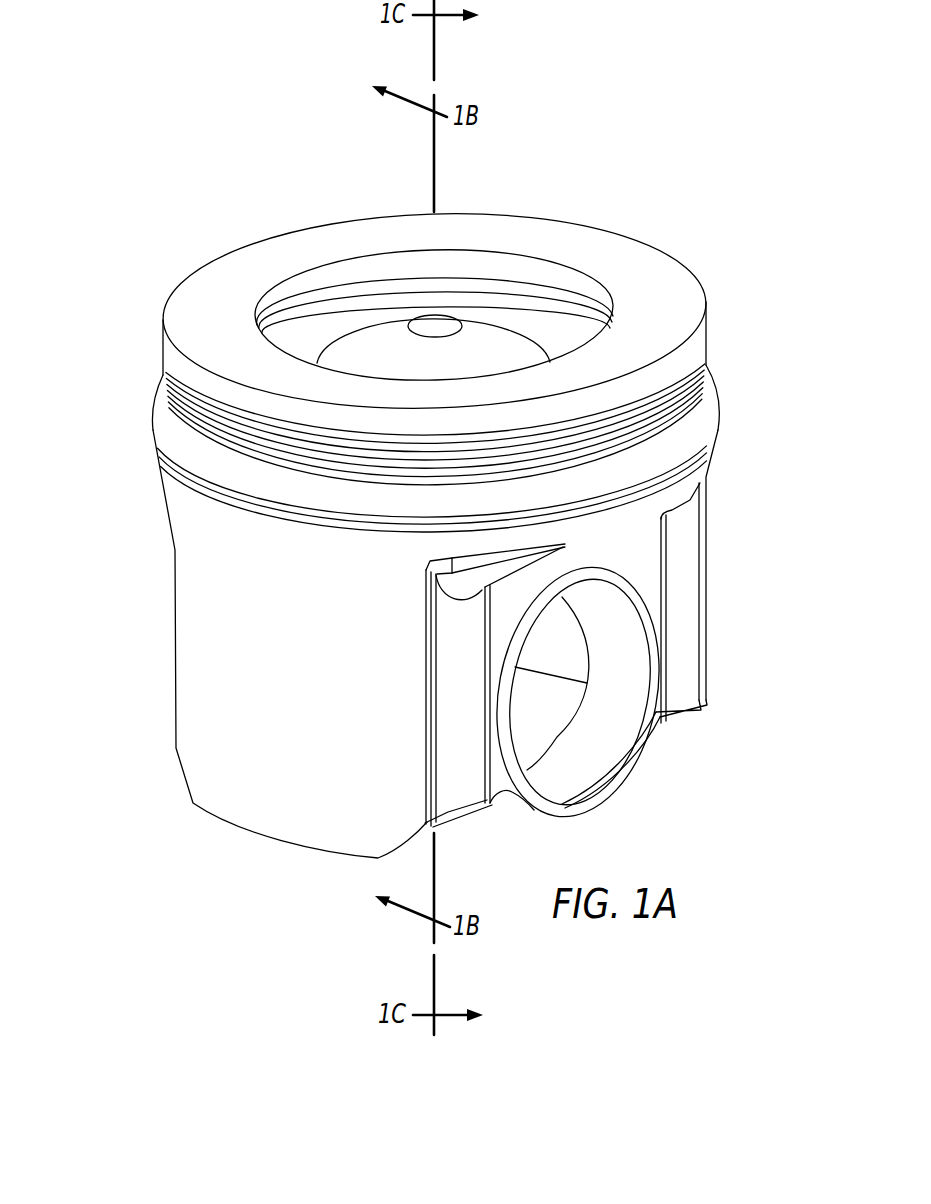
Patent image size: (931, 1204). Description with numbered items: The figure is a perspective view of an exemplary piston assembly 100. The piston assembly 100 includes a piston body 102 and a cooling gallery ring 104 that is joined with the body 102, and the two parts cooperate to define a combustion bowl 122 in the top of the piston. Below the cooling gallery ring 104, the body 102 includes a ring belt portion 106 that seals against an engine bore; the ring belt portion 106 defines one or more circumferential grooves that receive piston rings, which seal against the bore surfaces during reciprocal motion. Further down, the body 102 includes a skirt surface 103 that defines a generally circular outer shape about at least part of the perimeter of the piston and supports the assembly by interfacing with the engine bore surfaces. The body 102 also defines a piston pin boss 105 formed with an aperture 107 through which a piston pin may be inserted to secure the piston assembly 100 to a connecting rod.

The piston assembly 100 is at (186, 187).
The piston body 102 is at (190, 585).
The skirt surface 103 is at (300, 656).
The cooling gallery ring 104 is at (648, 280).
The piston pin boss 105 is at (667, 722).
The ring belt portion 106 is at (723, 305).
The aperture 107 is at (613, 693).
The combustion bowl 122 is at (350, 330).